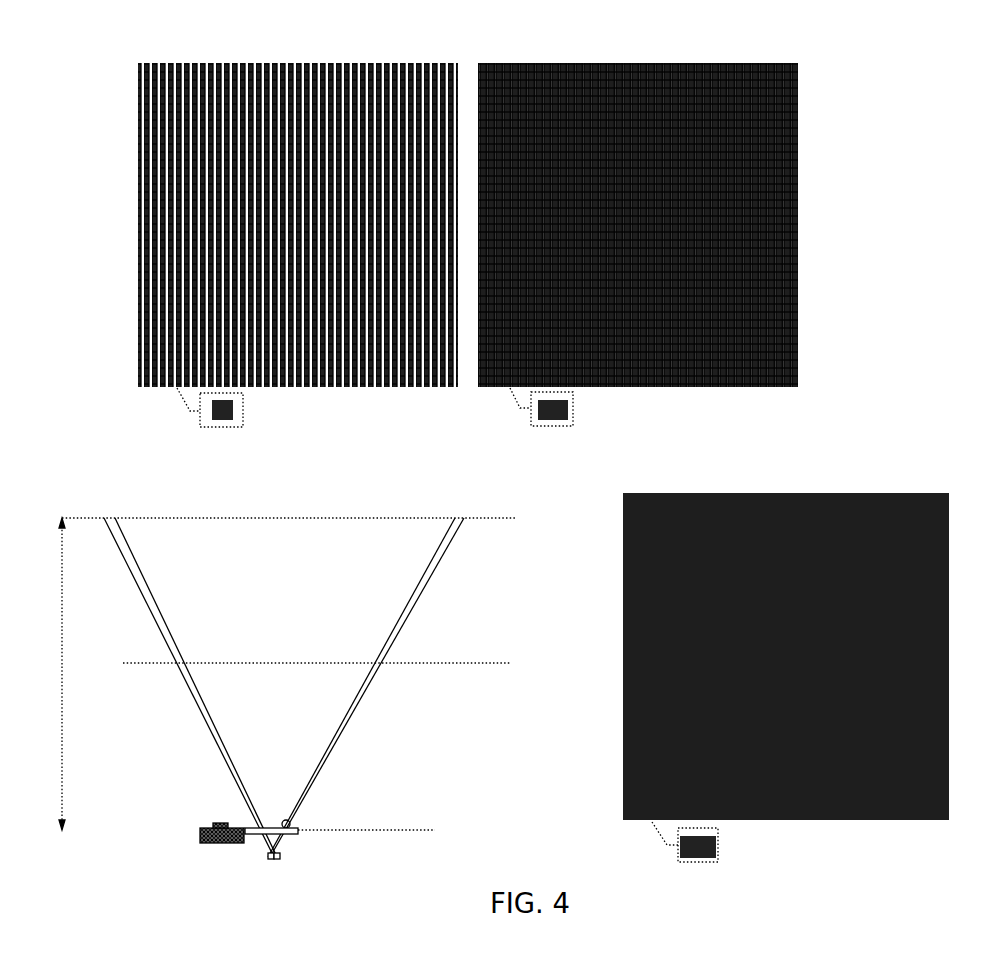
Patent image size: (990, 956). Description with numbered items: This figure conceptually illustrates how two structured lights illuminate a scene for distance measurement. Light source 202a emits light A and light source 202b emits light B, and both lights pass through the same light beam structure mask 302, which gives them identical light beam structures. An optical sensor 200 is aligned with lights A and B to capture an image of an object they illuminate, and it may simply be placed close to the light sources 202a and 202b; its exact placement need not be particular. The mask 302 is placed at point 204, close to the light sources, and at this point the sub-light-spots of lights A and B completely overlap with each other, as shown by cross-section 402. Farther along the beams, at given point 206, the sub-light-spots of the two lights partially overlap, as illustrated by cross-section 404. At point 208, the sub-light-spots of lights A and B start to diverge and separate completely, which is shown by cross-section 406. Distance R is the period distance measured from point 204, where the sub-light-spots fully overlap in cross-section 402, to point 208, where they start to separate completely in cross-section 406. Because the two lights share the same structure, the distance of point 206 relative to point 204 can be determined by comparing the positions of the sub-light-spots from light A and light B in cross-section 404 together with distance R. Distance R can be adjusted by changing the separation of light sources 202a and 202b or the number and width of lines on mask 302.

The cross-section of the two lights at point 204 402 is at (278, 392).
The cross-section of the two lights at point 206 404 is at (615, 392).
The cross-section of the two lights at point 208 406 is at (763, 828).
The point 208 is at (272, 518).
The given point 206 is at (300, 663).
The point 204 is at (292, 821).
The light beam structure mask 302 is at (298, 834).
The optical sensor 200 is at (200, 838).
The light source 202a is at (266, 857).
The light source 202b is at (281, 858).
The light A is at (111, 536).
The light B is at (438, 565).
The distance R is at (64, 674).